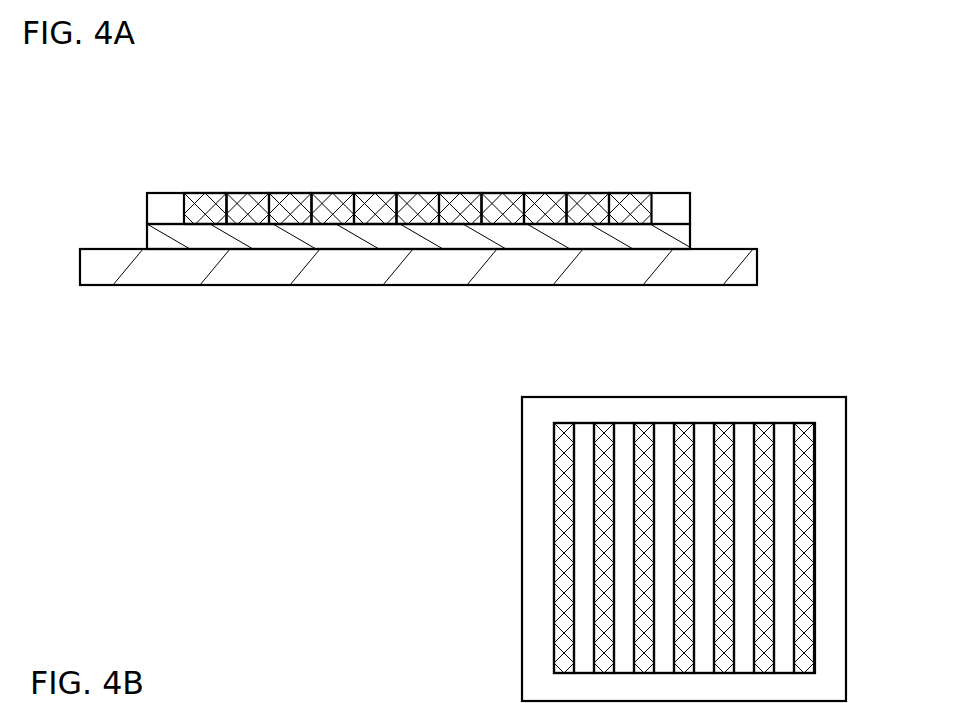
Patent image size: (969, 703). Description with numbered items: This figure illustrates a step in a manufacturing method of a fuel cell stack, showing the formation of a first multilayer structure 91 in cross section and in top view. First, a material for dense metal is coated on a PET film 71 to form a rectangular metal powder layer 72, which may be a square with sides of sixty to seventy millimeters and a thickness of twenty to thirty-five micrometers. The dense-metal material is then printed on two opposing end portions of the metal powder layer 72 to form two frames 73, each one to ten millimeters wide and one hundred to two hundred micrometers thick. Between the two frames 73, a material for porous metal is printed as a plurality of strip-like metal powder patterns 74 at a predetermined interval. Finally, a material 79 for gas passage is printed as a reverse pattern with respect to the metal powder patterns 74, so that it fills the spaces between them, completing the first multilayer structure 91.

In FIG. 4A, the PET film 71 is at (740, 262).
In FIG. 4B, the PET film 71 is at (832, 687).
In FIG. 4A, the metal powder layer 72 is at (160, 237).
In FIG. 4A, the frame 73 is at (672, 213).
In FIG. 4B, the frame 73 is at (560, 648).
In FIG. 4A, the metal powder pattern 74 is at (502, 202).
In FIG. 4B, the metal powder pattern 74 is at (733, 493).
In FIG. 4A, the material for gas passage 79 is at (452, 202).
In FIG. 4B, the material for gas passage 79 is at (743, 445).
In FIG. 4A, the first multilayer structure 91 is at (195, 133).